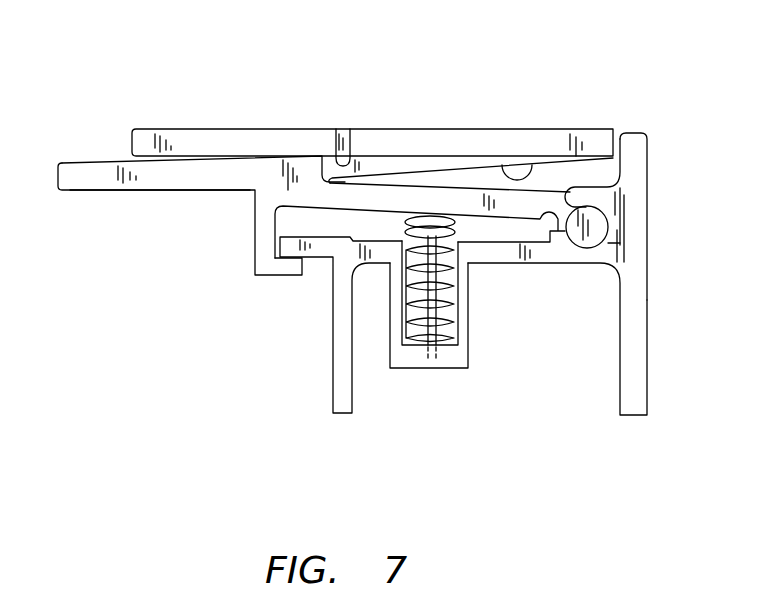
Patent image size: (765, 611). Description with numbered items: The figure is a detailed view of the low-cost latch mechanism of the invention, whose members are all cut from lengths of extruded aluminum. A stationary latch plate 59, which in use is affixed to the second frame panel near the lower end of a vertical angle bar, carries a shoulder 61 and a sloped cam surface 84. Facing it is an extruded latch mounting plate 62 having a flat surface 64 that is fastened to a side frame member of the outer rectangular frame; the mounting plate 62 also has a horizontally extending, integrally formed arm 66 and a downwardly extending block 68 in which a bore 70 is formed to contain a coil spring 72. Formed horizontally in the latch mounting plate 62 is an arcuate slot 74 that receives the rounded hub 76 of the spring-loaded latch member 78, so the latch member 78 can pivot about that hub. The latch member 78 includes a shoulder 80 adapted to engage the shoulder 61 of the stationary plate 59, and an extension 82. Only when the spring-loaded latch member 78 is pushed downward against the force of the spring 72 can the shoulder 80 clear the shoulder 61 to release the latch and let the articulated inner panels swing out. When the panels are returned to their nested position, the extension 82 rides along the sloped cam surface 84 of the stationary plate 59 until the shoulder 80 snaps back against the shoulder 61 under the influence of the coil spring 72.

The stationary latch plate 59 is at (450, 129).
The shoulder 61 is at (346, 130).
The sloped cam surface 84 is at (534, 166).
The extension 82 is at (70, 180).
The spring-loaded latch member 78 is at (117, 188).
The shoulder 80 is at (325, 168).
The arcuate slot 74 is at (603, 205).
The rounded hub 76 is at (590, 231).
The latch mounting plate 62 is at (637, 302).
The flat surface 64 is at (645, 370).
The arm 66 is at (513, 268).
The block 68 is at (413, 370).
The bore 70 is at (437, 340).
The spring 72 is at (397, 312).